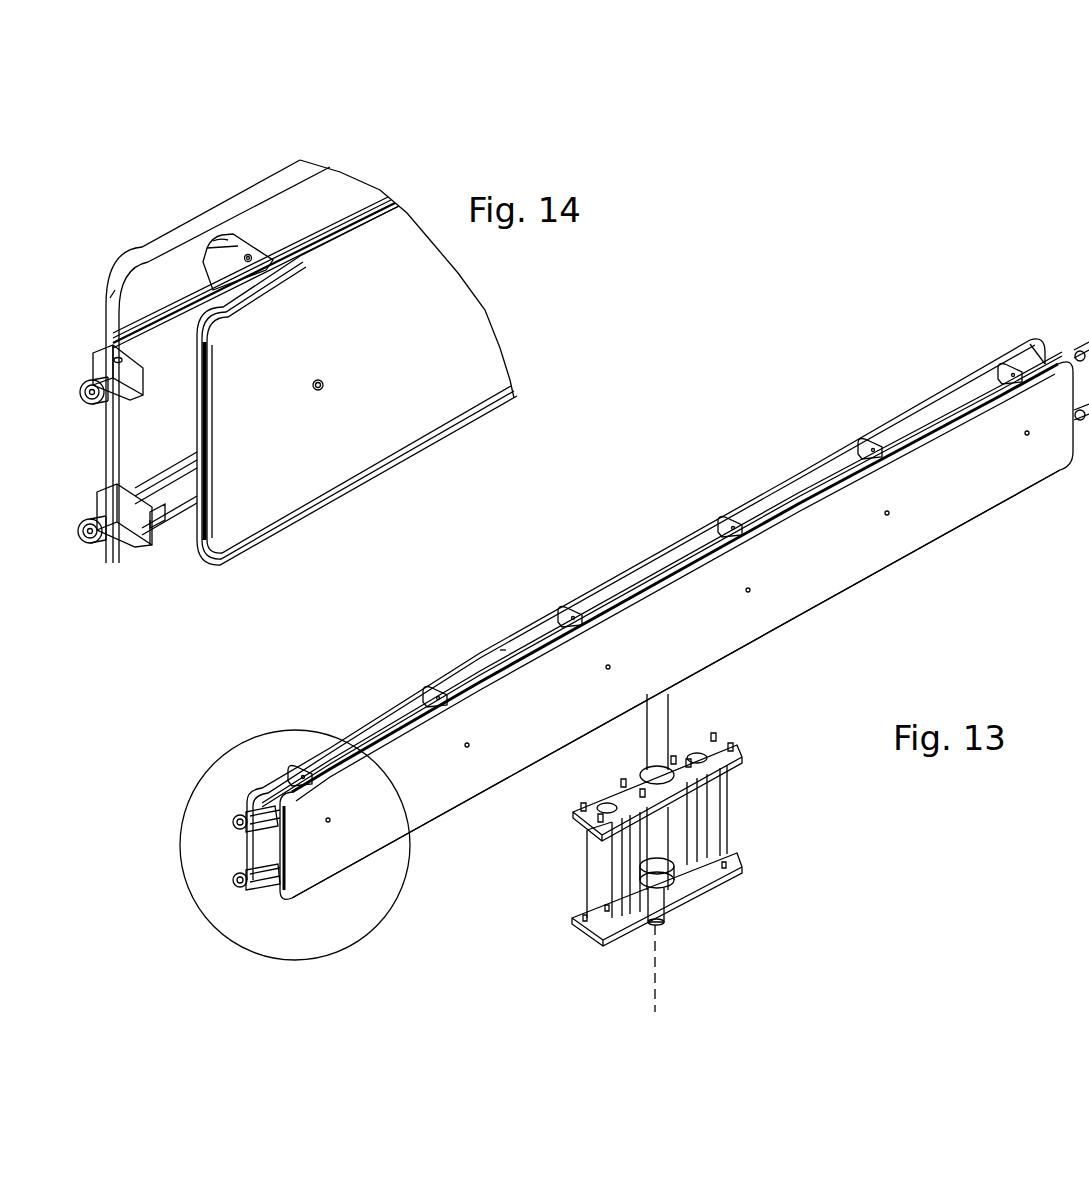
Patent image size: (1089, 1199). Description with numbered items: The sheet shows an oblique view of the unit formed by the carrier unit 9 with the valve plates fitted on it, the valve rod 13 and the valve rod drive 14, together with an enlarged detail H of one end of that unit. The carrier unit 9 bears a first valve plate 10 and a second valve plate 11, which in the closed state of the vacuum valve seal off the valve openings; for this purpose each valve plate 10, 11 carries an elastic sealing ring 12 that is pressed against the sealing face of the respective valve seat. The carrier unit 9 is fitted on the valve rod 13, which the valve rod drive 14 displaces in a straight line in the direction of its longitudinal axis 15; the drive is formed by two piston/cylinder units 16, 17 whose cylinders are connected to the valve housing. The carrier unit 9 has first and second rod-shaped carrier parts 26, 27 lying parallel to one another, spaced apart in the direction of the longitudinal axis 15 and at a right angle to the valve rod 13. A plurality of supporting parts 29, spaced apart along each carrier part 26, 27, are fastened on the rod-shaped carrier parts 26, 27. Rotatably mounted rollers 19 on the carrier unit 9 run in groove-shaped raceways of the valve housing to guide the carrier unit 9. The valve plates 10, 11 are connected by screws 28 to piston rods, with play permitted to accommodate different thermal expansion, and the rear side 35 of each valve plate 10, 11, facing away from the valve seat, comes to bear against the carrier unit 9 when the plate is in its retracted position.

In FIG. 14, the carrier unit 9 is at (156, 572).
In FIG. 13, the carrier unit 9 is at (510, 649).
In FIG. 14, the first valve plate 10 is at (165, 238).
In FIG. 13, the first valve plate 10 is at (795, 482).
In FIG. 14, the second valve plate 11 is at (232, 540).
In FIG. 13, the second valve plate 11 is at (965, 494).
In FIG. 14, the elastic sealing ring 12 is at (300, 530).
In FIG. 13, the elastic sealing ring 12 is at (625, 602).
In FIG. 13, the valve rod 13 is at (661, 723).
In FIG. 13, the valve rod drive 14 is at (586, 868).
In FIG. 13, the longitudinal axis 15 is at (658, 955).
In FIG. 13, the piston/cylinder unit 16 is at (612, 888).
In FIG. 13, the piston/cylinder unit 17 is at (714, 829).
In FIG. 14, the roller 19 is at (92, 372).
In FIG. 13, the roller 19 is at (238, 818).
In FIG. 14, the first rod-shaped carrier part 26 is at (150, 333).
In FIG. 13, the first rod-shaped carrier part 26 is at (693, 554).
In FIG. 14, the second rod-shaped carrier part 27 is at (178, 512).
In FIG. 13, the second rod-shaped carrier part 27 is at (270, 887).
In FIG. 14, the screw 28 is at (320, 392).
In FIG. 13, the screw 28 is at (888, 515).
In FIG. 14, the supporting part 29 is at (218, 246).
In FIG. 13, the supporting part 29 is at (874, 441).
In FIG. 14, the rear side 35 is at (279, 212).
In FIG. 13, the rear side 35 is at (389, 708).
In FIG. 13, the detail H is at (300, 845).